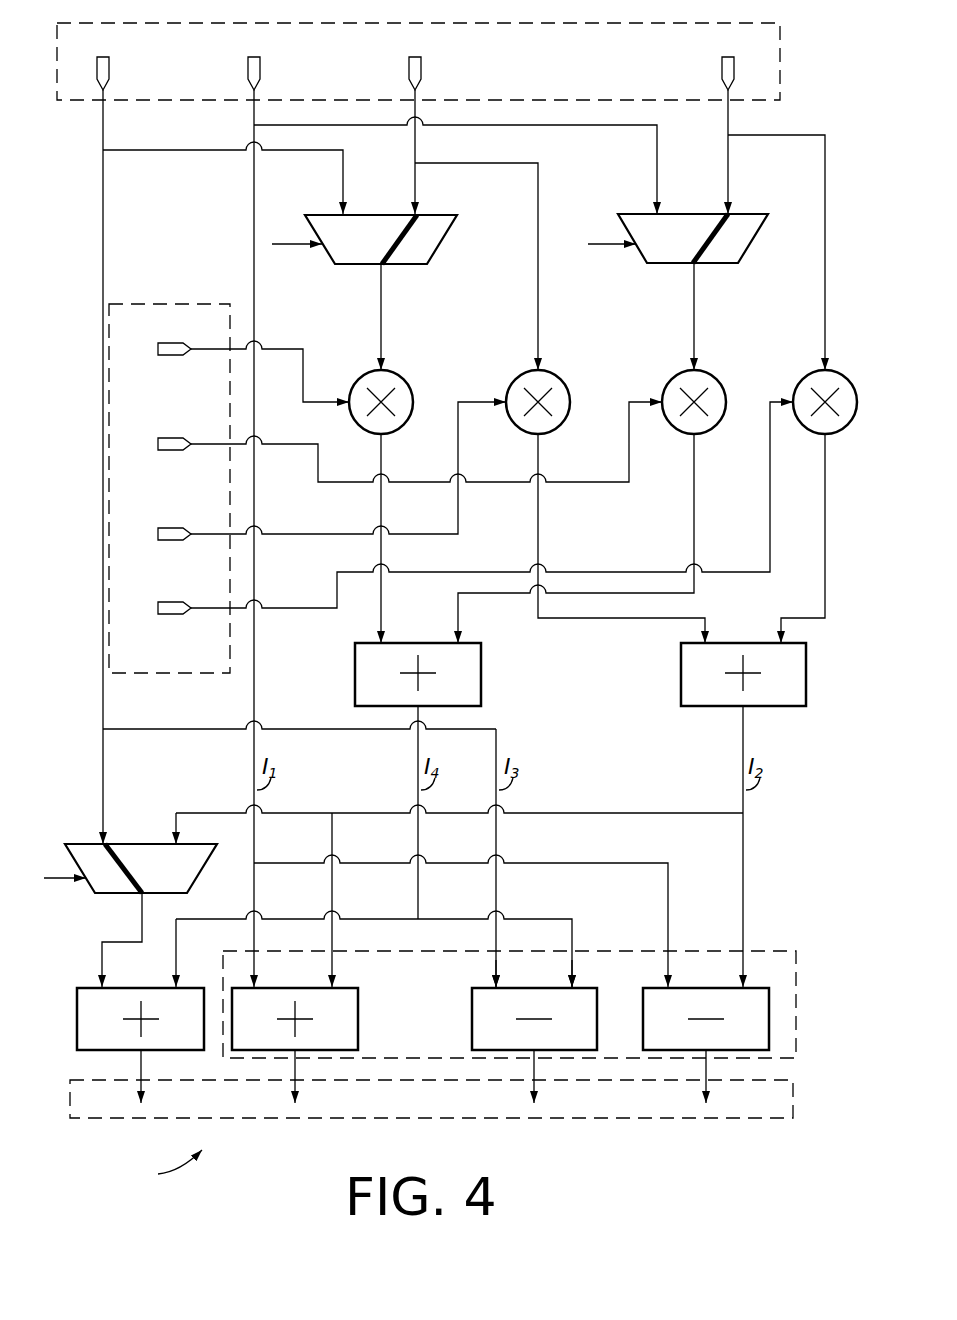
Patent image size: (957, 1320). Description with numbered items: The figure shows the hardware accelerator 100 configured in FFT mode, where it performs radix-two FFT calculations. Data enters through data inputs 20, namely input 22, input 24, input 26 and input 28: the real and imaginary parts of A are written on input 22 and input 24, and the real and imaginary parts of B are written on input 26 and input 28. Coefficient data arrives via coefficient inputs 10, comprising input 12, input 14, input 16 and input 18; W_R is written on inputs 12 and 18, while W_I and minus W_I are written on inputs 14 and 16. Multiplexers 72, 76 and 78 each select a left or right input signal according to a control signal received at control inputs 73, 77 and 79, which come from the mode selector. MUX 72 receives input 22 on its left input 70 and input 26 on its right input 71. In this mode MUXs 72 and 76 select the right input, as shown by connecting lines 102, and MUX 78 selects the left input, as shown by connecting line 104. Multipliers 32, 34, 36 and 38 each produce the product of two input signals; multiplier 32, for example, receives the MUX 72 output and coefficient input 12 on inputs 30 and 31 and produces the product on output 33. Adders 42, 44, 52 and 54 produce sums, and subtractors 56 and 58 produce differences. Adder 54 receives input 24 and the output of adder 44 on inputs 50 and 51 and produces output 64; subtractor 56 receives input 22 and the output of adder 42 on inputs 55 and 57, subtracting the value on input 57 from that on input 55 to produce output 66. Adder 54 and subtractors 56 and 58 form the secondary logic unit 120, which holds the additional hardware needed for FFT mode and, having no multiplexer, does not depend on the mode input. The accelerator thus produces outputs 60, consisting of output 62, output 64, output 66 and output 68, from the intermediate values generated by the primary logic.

The coefficient inputs 10 is at (170, 303).
The coefficient input 12 is at (170, 342).
The coefficient input 14 is at (170, 437).
The coefficient input 16 is at (170, 527).
The coefficient input 18 is at (170, 601).
The data inputs 20 is at (213, 22).
The data input 22 is at (110, 72).
The data input 24 is at (261, 72).
The data input 26 is at (422, 72).
The data input 28 is at (735, 72).
The multiplier input 30 is at (367, 317).
The multiplier input 31 is at (270, 384).
The multiplier 32 is at (414, 402).
The multiplier output 33 is at (395, 538).
The multiplier 34 is at (571, 402).
The multiplier 36 is at (727, 402).
The multiplier 38 is at (804, 380).
The adder 42 is at (418, 674).
The adder 44 is at (743, 674).
The adder input 50 is at (240, 953).
The adder input 51 is at (317, 900).
The adder 52 is at (140, 1019).
The adder 54 is at (295, 1019).
The subtractor input 55 is at (482, 974).
The subtractor 56 is at (534, 1019).
The subtractor input 57 is at (557, 974).
The subtractor 58 is at (706, 1019).
The outputs 60 is at (452, 1118).
The output 62 is at (158, 1081).
The output 64 is at (312, 1081).
The output 66 is at (551, 1081).
The output 68 is at (724, 1081).
The left input 70 is at (223, 178).
The right input 71 is at (400, 152).
The multiplexer 72 is at (381, 239).
The control input 73 is at (297, 256).
The multiplexer 76 is at (693, 238).
The control input 77 is at (612, 256).
The multiplexer 78 is at (141, 868).
The control input 79 is at (65, 893).
The hardware accelerator 100 is at (155, 1168).
The connecting lines 102 is at (394, 256).
The connecting line 104 is at (134, 890).
The secondary logic unit 120 is at (776, 951).